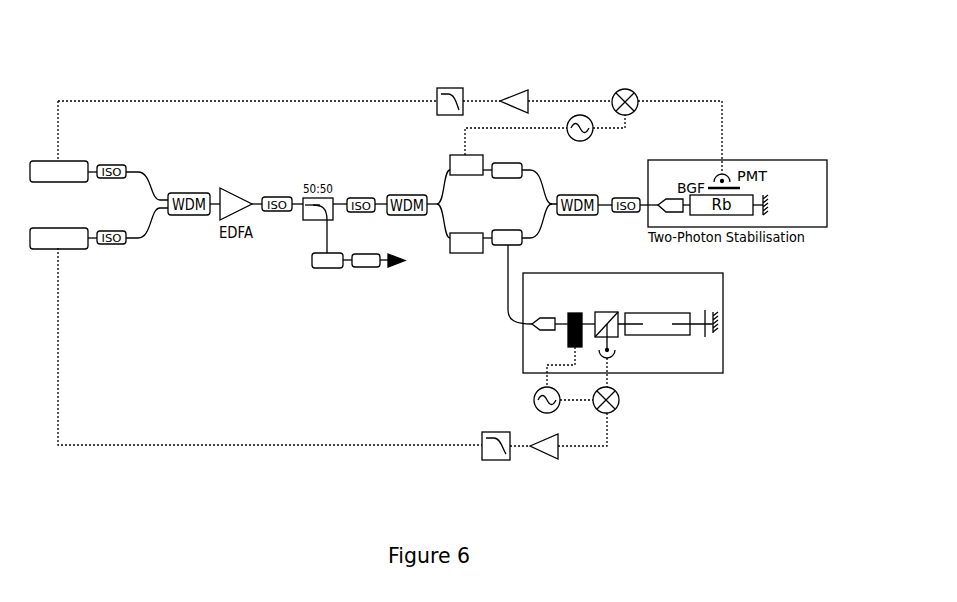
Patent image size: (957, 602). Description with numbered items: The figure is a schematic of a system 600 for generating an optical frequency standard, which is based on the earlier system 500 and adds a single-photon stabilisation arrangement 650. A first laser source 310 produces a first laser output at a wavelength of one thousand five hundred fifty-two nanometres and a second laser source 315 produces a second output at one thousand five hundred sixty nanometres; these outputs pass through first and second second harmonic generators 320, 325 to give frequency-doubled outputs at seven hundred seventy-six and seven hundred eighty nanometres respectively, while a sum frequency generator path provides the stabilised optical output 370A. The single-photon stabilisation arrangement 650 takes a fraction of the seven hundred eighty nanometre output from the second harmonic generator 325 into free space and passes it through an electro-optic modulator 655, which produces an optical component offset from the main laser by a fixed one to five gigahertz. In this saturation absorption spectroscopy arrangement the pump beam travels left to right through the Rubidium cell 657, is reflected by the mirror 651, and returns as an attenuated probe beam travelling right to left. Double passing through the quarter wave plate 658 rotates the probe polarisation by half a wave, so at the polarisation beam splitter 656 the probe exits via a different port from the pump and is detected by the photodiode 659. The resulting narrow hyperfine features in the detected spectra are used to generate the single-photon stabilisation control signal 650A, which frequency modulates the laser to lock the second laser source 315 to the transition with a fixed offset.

The system for generating an optical frequency standard 600 is at (270, 230).
The first laser source 310 is at (50, 126).
The second laser source 315 is at (50, 269).
The system 500 is at (417, 200).
The first second harmonic generator 320 is at (483, 183).
The second second harmonic generator 325 is at (487, 270).
The stabilised optical output 370A is at (380, 260).
The single-photon stabilisation control signal 650A is at (481, 444).
The single-photon stabilisation arrangement 650 is at (644, 383).
The electro-optic modulator 655 is at (530, 335).
The polarisation beam splitter 656 is at (665, 348).
The Rubidium cell 657 is at (686, 296).
The quarter wave plate 658 is at (750, 310).
The mirror 651 is at (755, 337).
The photodiode 659 is at (652, 373).